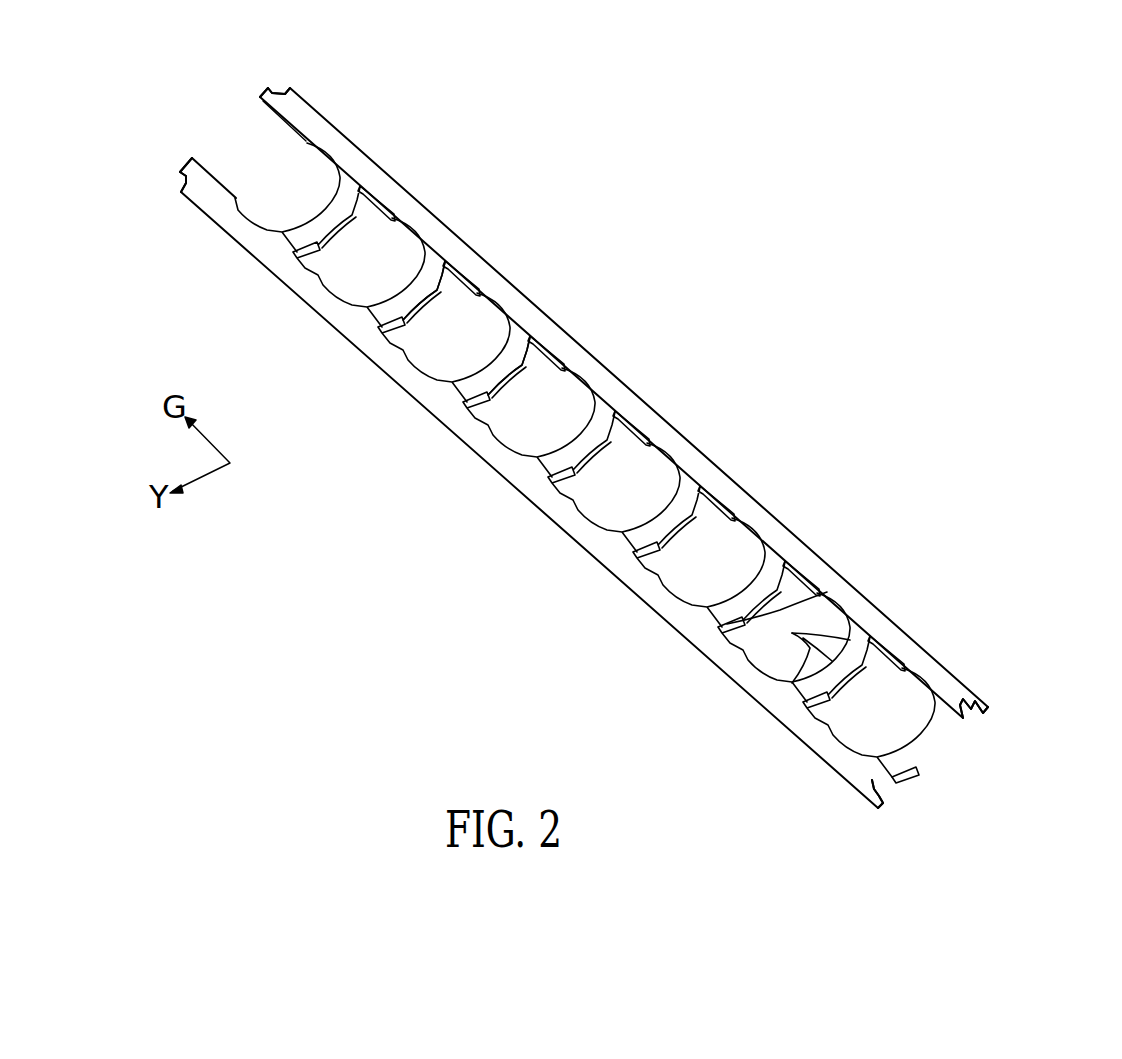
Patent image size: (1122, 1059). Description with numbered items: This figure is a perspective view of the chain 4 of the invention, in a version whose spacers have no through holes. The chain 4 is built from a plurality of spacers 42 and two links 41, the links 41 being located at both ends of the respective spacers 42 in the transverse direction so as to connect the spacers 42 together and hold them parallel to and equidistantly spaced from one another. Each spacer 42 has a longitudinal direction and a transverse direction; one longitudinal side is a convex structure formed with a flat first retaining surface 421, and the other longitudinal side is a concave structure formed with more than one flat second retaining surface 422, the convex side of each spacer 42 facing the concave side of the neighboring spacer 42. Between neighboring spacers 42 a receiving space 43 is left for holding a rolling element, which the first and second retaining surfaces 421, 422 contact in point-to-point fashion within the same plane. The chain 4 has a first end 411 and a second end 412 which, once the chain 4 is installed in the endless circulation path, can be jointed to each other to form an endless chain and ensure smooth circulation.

The chain 4 is at (102, 67).
The link 41 is at (654, 406).
The first end 411 is at (272, 86).
The second end 412 is at (983, 713).
The spacer 42 is at (360, 188).
The receiving space 43 is at (478, 333).
The first retaining surface 421 is at (818, 603).
The second retaining surface 422 is at (792, 633).